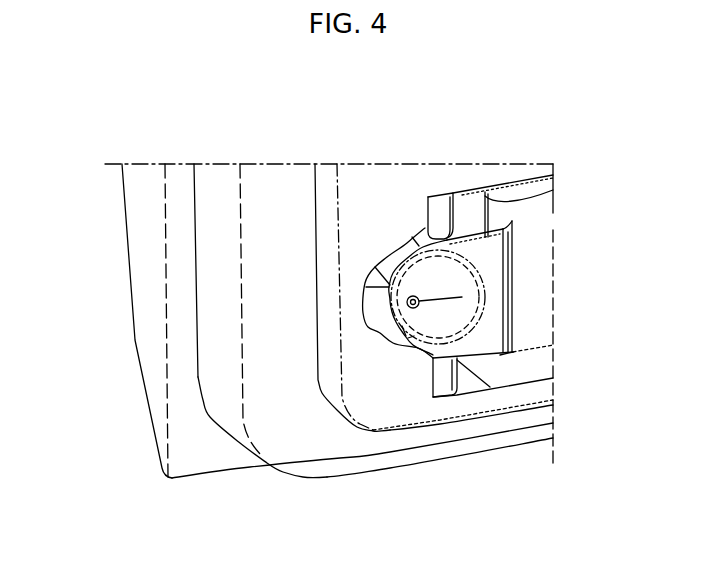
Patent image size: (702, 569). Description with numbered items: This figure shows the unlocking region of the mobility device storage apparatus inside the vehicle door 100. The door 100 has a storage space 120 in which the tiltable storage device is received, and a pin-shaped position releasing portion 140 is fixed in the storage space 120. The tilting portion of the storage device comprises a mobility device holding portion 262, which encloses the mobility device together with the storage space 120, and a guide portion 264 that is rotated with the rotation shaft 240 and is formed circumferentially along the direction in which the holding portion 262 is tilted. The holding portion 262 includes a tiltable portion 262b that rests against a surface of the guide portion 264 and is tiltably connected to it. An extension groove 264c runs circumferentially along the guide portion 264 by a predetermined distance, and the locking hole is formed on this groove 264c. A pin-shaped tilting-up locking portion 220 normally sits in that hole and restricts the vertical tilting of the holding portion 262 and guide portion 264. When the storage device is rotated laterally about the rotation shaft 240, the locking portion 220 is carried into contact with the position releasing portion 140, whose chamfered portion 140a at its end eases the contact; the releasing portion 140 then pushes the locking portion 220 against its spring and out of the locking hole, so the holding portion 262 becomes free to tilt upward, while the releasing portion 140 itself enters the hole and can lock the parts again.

The door 100 is at (276, 184).
The storage space 120 is at (553, 190).
The position releasing portion 140 is at (378, 285).
The chamfered portion 140a is at (407, 300).
The tilting-up locking portion 220 is at (487, 288).
The rotation shaft 240 is at (438, 215).
The mobility device holding portion 262 is at (535, 370).
The tiltable portion 262b is at (483, 350).
The guide portion 264 is at (457, 316).
The extension groove 264c is at (420, 357).